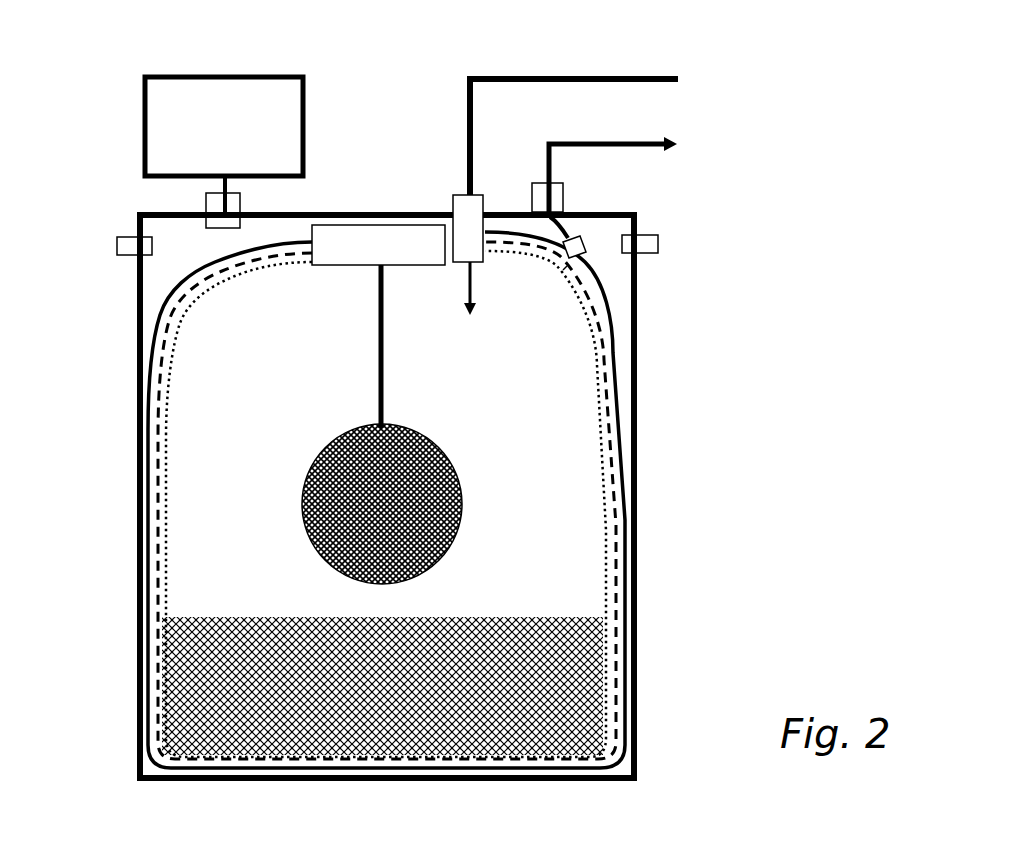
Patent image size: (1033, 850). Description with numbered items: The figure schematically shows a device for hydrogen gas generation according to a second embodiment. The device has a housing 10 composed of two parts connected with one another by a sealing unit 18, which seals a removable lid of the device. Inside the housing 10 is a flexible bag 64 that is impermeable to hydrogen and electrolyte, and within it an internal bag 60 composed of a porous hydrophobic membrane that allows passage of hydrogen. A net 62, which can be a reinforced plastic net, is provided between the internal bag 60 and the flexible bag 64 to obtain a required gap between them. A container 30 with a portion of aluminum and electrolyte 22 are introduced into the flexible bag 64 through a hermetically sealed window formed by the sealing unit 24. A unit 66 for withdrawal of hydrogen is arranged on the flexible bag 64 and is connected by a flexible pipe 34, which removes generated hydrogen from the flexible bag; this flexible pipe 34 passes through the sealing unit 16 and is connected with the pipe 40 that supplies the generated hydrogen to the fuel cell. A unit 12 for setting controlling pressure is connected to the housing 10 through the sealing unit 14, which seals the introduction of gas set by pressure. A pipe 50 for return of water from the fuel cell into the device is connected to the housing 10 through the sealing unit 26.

The housing 10 is at (137, 315).
The unit for setting controlling pressure 12 is at (157, 140).
The unit for sealing introduction of gas 14 is at (240, 203).
The unit for sealing a pipe for supply of generated hydrogen 16 is at (533, 190).
The unit for sealing a removable lid 18 is at (130, 250).
The electrolyte 22 is at (167, 643).
The unit for sealing the aluminum container 24 is at (367, 268).
The unit for sealing a pipe for return of water 26 is at (462, 272).
The container with a portion of aluminum 30 is at (300, 510).
The flexible pipe 34 is at (580, 213).
The pipe for supplying generated hydrogen 40 is at (627, 140).
The pipe for return of water 50 is at (623, 74).
The internal bag 60 is at (603, 390).
The net 62 is at (620, 420).
The flexible bag 64 is at (637, 515).
The unit for withdrawal of hydrogen 66 is at (563, 270).